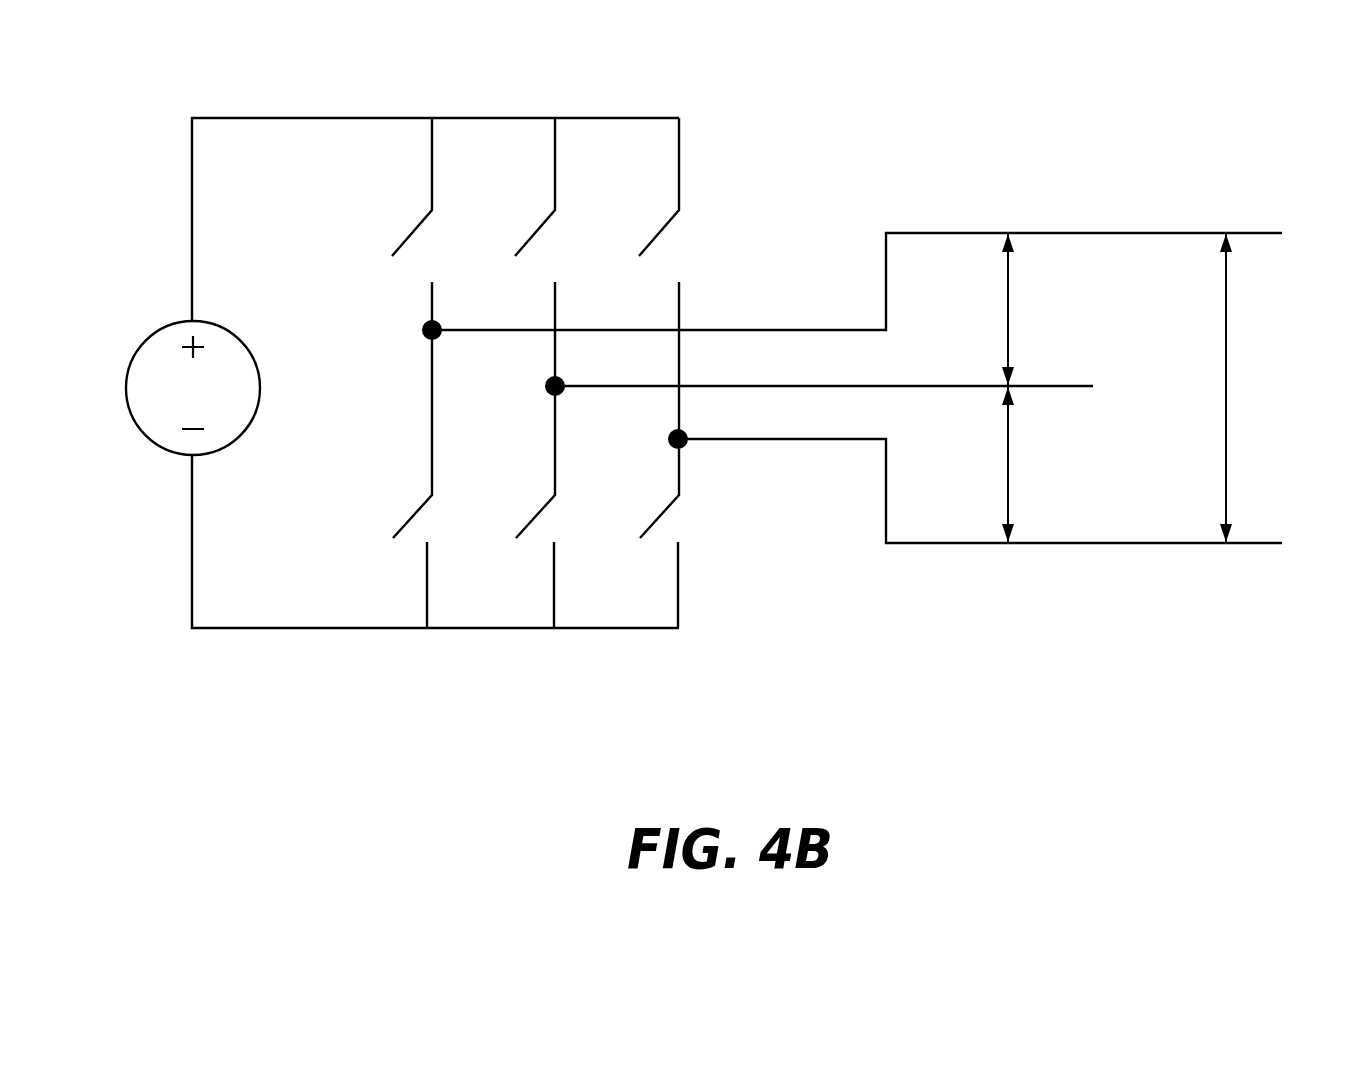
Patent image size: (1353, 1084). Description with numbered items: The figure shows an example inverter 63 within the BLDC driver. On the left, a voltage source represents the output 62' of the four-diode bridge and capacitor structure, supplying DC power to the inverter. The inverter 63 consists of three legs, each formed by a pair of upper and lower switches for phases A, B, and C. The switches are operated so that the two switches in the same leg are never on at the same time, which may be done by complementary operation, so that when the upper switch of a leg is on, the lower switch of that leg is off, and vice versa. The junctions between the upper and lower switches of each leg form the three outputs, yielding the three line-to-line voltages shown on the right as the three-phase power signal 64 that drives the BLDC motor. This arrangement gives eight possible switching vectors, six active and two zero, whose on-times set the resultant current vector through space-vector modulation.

The output 62' is at (179, 424).
The inverter 63 is at (633, 668).
The three-phase power signal 64 is at (1137, 176).